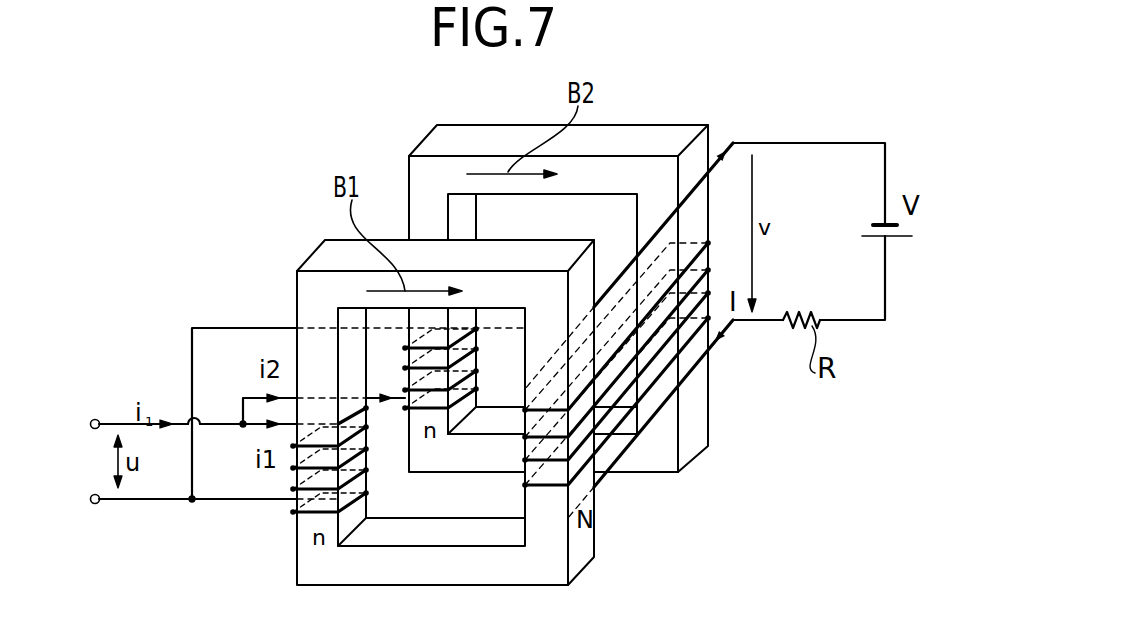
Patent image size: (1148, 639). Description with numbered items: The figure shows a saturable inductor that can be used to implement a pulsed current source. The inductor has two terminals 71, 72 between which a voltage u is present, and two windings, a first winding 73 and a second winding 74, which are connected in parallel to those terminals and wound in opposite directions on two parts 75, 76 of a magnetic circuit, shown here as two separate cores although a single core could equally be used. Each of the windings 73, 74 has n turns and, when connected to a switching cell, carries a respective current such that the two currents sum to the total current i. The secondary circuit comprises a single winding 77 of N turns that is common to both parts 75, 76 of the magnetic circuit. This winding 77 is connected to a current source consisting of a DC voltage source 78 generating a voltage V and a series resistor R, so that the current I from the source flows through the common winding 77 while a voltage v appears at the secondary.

The terminal 71 is at (93, 423).
The terminal 72 is at (95, 505).
The first winding 73 is at (367, 475).
The second winding 74 is at (477, 388).
The part of magnetic circuit 75 is at (593, 548).
The part of magnetic circuit 76 is at (697, 420).
The winding 77 is at (695, 365).
The DC voltage source 78 is at (897, 238).